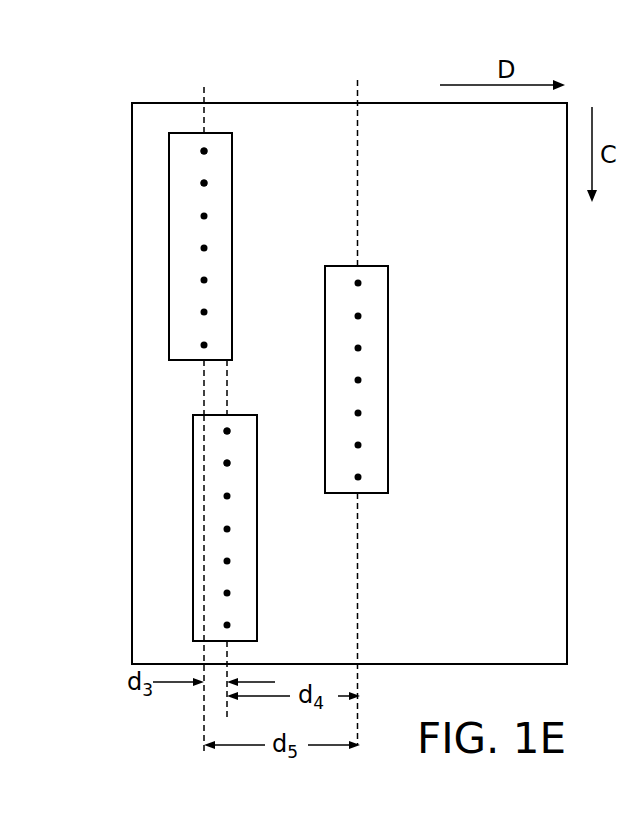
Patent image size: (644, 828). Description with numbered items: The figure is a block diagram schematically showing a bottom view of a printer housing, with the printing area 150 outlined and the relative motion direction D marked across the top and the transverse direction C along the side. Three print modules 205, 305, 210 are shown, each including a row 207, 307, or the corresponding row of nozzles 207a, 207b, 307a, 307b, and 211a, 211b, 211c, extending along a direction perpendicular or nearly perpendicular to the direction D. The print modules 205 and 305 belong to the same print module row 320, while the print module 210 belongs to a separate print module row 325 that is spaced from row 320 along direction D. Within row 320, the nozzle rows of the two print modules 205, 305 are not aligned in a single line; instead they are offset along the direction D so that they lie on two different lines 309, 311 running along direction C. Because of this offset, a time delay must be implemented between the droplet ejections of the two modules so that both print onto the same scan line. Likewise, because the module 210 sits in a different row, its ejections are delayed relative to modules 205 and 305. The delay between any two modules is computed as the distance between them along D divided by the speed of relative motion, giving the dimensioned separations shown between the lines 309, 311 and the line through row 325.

The display area 150 is at (542, 144).
The print module 205 is at (178, 287).
The row of nozzles 207 is at (204, 151).
The nozzle 207a is at (204, 151).
The nozzle 207b is at (204, 183).
The print module 305 is at (200, 571).
The row of nozzles 307 is at (227, 431).
The nozzle 307a is at (227, 431).
The nozzle 307b is at (227, 463).
The print module 210 is at (385, 395).
The nozzle 211a is at (358, 283).
The nozzle 211b is at (358, 316).
The nozzle 211c is at (358, 348).
The print module row 320 is at (203, 93).
The print module row 325 is at (360, 97).
The line 311 is at (230, 673).
The line 309 is at (205, 720).